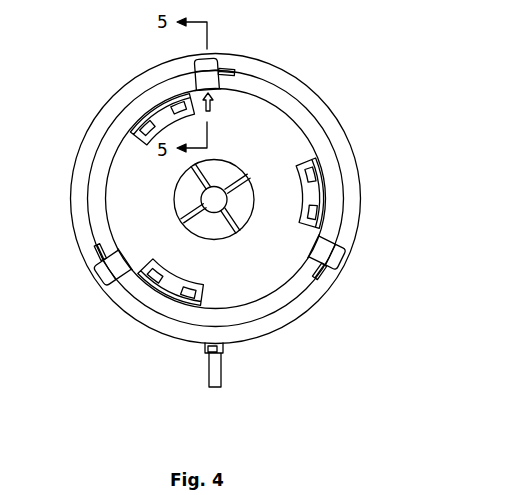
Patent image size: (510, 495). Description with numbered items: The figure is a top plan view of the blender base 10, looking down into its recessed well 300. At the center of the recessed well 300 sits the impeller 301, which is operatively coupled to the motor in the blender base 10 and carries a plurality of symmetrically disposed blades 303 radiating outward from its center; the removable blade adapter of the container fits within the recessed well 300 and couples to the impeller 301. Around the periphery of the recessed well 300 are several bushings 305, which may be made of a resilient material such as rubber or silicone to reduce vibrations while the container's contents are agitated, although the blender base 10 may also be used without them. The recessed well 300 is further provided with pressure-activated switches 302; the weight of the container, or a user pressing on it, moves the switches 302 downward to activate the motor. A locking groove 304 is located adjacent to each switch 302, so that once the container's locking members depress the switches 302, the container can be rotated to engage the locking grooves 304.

The blender base 10 is at (327, 100).
The recessed well 300 is at (258, 104).
The impeller 301 is at (214, 199).
The pressure-activated switch 302 is at (230, 72).
The blade 303 is at (233, 178).
The locking groove 304 is at (96, 248).
The bushing 305 is at (157, 120).